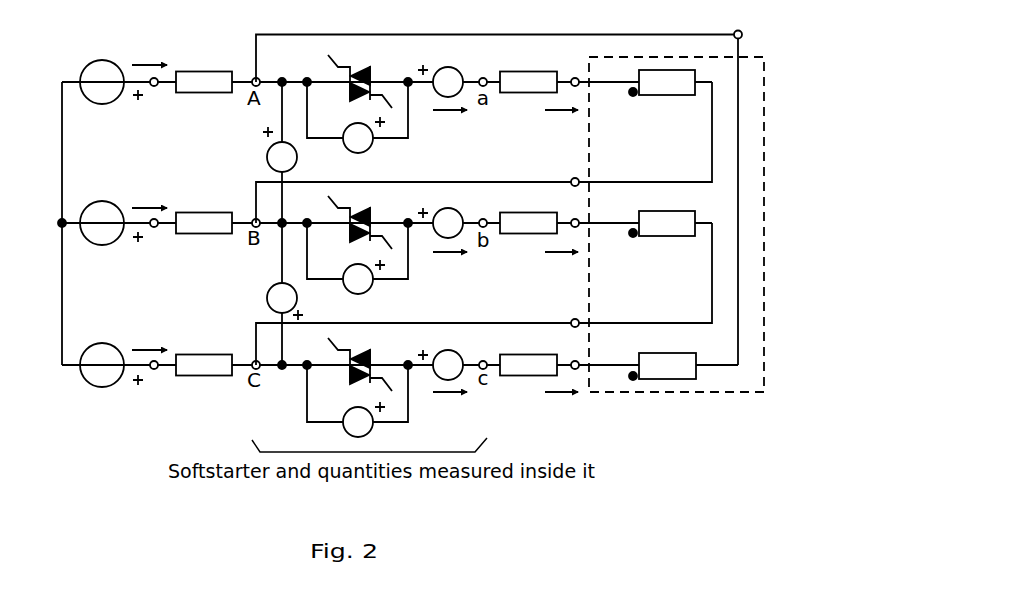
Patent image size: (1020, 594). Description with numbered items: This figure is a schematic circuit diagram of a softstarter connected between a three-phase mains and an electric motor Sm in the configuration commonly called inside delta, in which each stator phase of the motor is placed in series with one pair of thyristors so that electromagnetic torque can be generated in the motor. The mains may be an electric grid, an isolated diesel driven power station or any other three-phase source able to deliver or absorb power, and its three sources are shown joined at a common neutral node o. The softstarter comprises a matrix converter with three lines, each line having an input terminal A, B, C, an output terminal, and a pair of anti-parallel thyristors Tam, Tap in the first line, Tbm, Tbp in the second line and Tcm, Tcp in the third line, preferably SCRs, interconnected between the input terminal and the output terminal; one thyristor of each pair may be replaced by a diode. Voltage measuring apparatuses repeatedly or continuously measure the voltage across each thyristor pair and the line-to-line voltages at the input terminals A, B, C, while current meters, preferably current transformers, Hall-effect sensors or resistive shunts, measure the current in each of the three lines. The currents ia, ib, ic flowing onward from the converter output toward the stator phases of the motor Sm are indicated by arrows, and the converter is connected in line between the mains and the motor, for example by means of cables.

The thyristor Tam is at (363, 69).
The thyristor Tap is at (350, 100).
The thyristor Tbm is at (363, 212).
The thyristor Tbp is at (350, 245).
The thyristor Tcm is at (363, 351).
The thyristor Tcp is at (350, 384).
The motor phase current a ia is at (561, 123).
The motor phase current b ib is at (561, 264).
The motor phase current c ic is at (561, 406).
The motor Sm is at (676, 224).
The input terminal A is at (507, 194).
The input terminal B is at (418, 188).
The input terminal C is at (418, 328).
The neutral node o is at (68, 213).